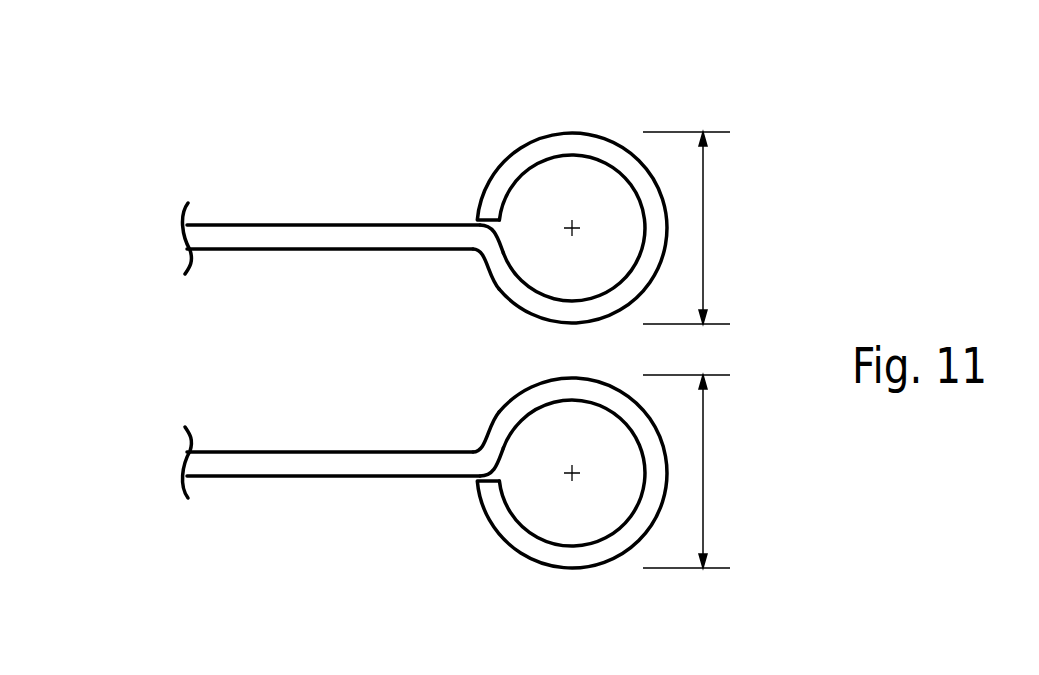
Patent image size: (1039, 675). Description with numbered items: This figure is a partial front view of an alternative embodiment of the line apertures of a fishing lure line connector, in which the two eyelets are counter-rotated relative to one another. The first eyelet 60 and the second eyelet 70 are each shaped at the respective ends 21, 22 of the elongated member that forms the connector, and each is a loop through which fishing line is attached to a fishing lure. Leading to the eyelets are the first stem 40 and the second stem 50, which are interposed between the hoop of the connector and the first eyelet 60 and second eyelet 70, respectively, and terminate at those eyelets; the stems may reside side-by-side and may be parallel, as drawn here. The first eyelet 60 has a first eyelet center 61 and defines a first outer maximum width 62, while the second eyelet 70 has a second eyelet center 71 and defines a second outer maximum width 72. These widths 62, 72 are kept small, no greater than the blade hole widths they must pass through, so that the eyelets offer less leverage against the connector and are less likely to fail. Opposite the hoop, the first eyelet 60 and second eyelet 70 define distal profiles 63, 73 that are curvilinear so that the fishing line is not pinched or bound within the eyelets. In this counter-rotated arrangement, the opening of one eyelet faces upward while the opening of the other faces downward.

The first end 21 is at (500, 513).
The second end 22 is at (500, 191).
The first stem 40 is at (242, 465).
The second stem 50 is at (203, 238).
The first eyelet 60 is at (572, 515).
The first eyelet center 61 is at (565, 475).
The first outer maximum width 62 is at (705, 475).
The distal profile 63 is at (642, 466).
The second eyelet 70 is at (572, 191).
The second eyelet center 71 is at (577, 217).
The second outer maximum width 72 is at (705, 232).
The distal profile 73 is at (642, 233).